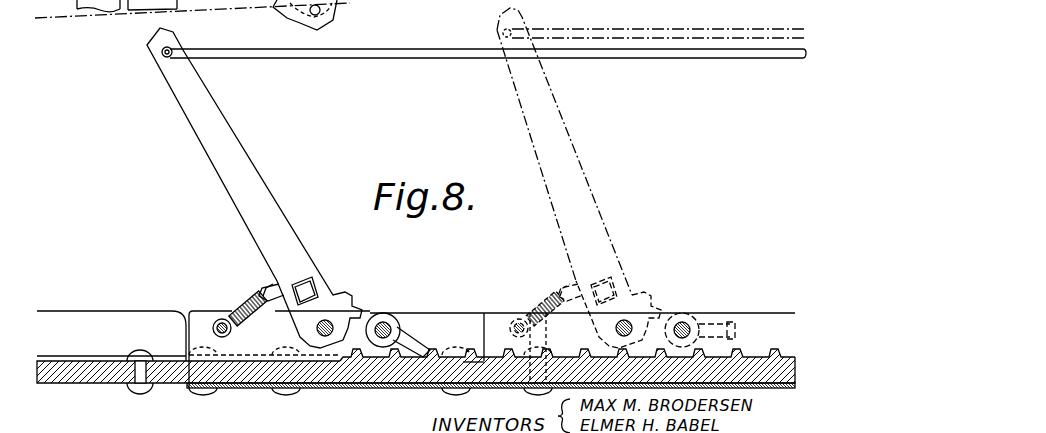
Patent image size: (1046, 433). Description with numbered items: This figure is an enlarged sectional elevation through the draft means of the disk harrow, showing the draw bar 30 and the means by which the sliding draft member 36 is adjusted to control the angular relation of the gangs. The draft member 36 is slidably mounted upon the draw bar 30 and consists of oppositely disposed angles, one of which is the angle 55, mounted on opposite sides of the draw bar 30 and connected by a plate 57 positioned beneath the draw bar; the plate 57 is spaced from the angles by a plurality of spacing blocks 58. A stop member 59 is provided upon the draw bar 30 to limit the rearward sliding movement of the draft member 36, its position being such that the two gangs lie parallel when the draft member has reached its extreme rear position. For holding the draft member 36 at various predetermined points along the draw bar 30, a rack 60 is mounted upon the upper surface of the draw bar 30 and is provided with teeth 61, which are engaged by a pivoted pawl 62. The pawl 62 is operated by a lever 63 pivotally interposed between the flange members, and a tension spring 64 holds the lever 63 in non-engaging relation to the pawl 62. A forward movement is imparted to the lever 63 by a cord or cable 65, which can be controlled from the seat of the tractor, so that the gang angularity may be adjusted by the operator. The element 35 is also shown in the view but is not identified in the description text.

The draw bar 30 is at (102, 373).
The rivet 35 is at (146, 391).
The draft member 36 is at (183, 303).
The angle 55 is at (755, 313).
The plate 57 is at (338, 388).
The spacing blocks 58 is at (185, 388).
The stop member 59 is at (100, 315).
The rack 60 is at (484, 333).
The teeth 61 is at (410, 360).
The pawl 62 is at (405, 328).
The lever 63 is at (278, 230).
The tension spring 64 is at (242, 300).
The cord or cable 65 is at (398, 57).